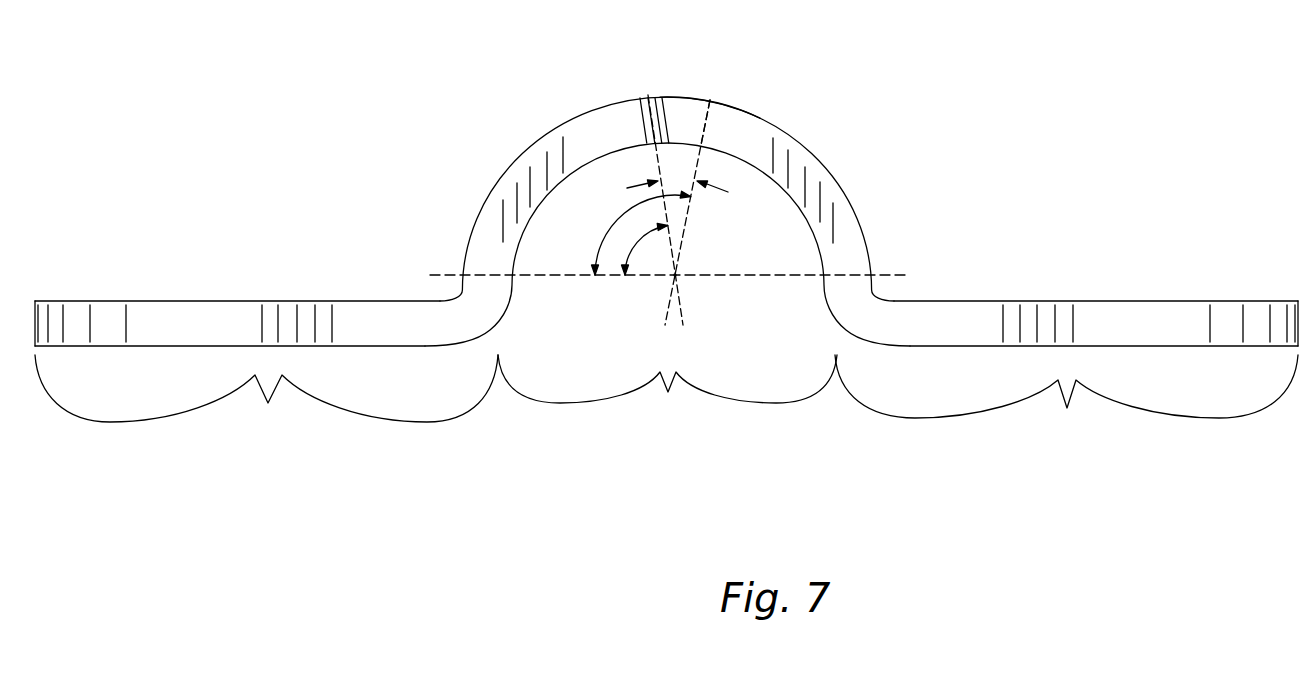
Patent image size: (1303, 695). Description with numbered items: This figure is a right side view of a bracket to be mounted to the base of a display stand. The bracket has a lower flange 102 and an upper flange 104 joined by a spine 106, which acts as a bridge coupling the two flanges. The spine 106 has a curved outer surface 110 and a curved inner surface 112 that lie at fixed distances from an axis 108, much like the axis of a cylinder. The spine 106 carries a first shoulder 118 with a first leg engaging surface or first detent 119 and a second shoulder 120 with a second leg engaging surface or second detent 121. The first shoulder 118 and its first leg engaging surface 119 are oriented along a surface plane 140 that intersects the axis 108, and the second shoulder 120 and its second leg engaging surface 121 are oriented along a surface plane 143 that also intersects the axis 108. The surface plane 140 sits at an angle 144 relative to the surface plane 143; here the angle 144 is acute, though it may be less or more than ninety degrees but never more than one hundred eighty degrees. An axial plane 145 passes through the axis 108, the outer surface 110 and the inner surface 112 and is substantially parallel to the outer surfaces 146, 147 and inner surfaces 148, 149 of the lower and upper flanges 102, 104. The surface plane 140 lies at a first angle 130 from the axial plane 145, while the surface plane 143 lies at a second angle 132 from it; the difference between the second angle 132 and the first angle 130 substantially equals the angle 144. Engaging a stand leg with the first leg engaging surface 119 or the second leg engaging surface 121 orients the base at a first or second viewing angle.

The lower flange 102 is at (266, 382).
The upper flange 104 is at (1066, 382).
The spine 106 is at (667, 300).
The axis 108 is at (675, 275).
The outer surface 110 is at (853, 211).
The inner surface 112 is at (785, 195).
The first shoulder 118 is at (631, 91).
The first leg engaging surface 119 is at (648, 127).
The second shoulder 120 is at (720, 109).
The second leg engaging surface 121 is at (703, 115).
The first angle 130 is at (637, 243).
The second angle 132 is at (625, 212).
The surface plane 140 is at (659, 176).
The surface plane 143 is at (699, 163).
The angle 144 is at (653, 189).
The axial plane 145 is at (740, 276).
The outer surface 146 is at (195, 300).
The outer surface 147 is at (1120, 301).
The inner surface 148 is at (348, 345).
The inner surface 149 is at (962, 345).